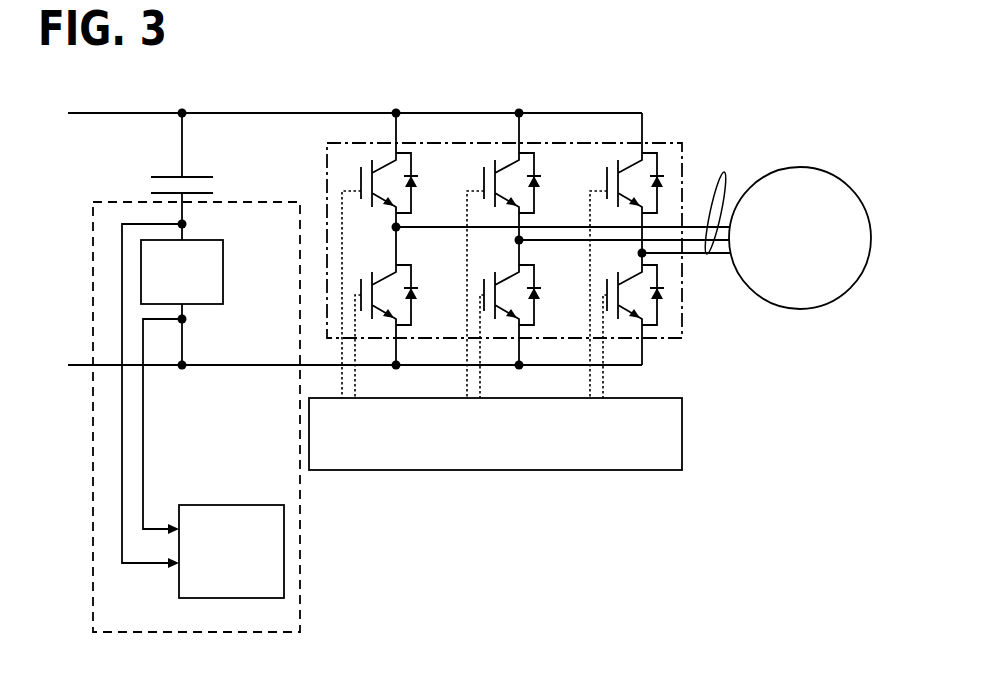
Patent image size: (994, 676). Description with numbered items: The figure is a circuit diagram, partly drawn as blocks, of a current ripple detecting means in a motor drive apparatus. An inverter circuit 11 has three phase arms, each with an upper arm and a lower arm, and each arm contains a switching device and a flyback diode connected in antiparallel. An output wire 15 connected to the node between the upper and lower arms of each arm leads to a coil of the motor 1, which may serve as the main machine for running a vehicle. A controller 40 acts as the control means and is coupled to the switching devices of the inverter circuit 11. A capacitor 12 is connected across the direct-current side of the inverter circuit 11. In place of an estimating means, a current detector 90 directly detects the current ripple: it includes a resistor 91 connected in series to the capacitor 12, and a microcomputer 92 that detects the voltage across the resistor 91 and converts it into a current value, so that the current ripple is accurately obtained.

The motor 1 is at (809, 167).
The inverter circuit 11 is at (682, 143).
The capacitor 12 is at (205, 177).
The output wire 15 is at (718, 199).
The controller 40 is at (683, 432).
The current detector 90 is at (302, 555).
The resistor 91 is at (223, 278).
The microcomputer 92 is at (237, 505).